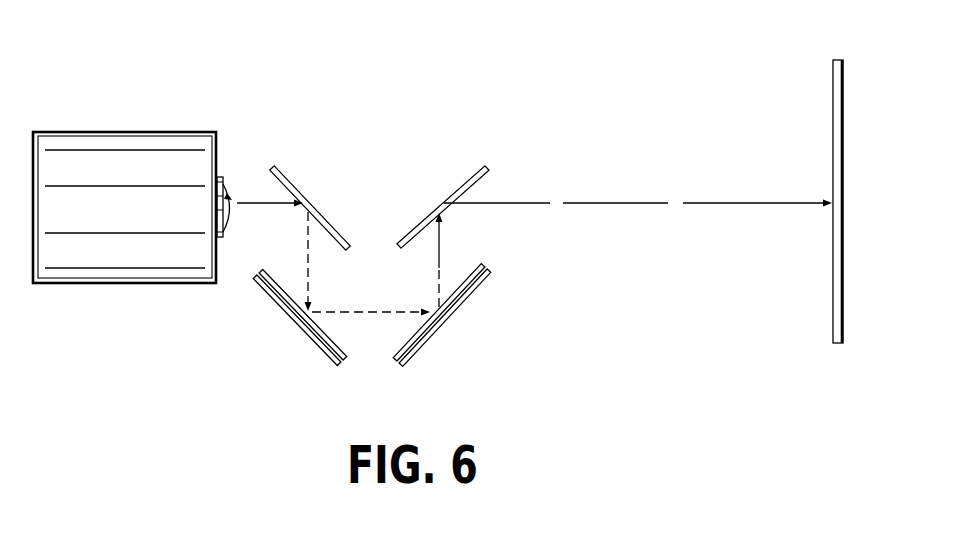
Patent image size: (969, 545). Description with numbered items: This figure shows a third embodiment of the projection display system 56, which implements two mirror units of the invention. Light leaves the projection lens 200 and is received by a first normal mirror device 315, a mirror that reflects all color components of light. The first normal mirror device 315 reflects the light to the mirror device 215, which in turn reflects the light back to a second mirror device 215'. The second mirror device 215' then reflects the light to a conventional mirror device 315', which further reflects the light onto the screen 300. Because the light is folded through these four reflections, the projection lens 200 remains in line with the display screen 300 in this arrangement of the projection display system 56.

The projection display system 56 is at (612, 102).
The projection lens 200 is at (122, 263).
The mirror device 215 is at (287, 327).
The second mirror device 215' is at (469, 315).
The screen 300 is at (830, 314).
The first normal mirror device 315 is at (310, 179).
The conventional mirror device 315' is at (446, 179).